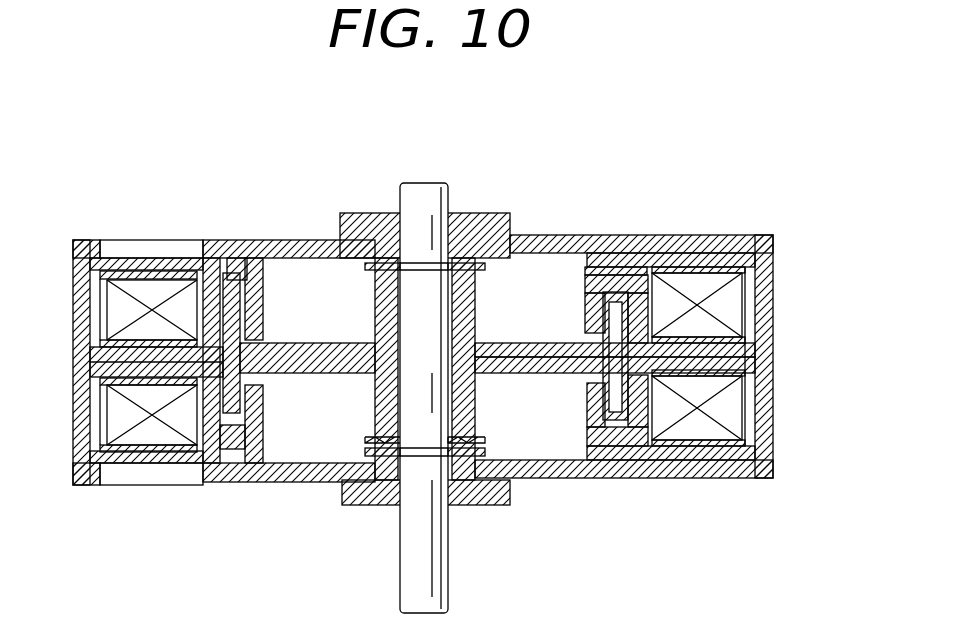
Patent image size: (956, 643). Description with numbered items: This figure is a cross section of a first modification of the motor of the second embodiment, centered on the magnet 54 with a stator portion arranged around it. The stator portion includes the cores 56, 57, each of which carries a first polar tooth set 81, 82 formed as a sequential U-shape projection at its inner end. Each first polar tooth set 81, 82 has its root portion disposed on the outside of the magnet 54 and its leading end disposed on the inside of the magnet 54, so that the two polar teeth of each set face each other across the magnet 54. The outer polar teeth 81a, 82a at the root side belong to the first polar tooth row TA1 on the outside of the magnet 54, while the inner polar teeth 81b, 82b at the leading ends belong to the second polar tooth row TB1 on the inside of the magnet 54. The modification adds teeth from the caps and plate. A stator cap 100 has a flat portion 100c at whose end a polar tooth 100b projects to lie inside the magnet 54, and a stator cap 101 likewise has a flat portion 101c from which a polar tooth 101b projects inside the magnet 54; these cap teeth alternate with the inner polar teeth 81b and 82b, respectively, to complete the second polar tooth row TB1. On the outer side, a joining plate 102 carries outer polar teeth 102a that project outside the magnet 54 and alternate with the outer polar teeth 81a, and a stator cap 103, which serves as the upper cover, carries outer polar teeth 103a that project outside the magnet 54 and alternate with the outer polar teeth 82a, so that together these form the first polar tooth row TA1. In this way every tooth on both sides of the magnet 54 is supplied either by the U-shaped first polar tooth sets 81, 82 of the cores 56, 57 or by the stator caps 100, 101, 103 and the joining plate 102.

The stator cap 100 is at (125, 486).
The polar tooth 100b is at (268, 470).
The flat portion 100c is at (170, 486).
The stator cap 101 is at (117, 258).
The polar tooth 101b is at (258, 298).
The flat portion 101c is at (143, 257).
The joining plate 102 is at (92, 487).
The outer polar tooth 102a is at (210, 486).
The stator cap 103 is at (317, 238).
The outer polar tooth 103a is at (213, 300).
The magnet 54 is at (615, 305).
The core 56 is at (745, 364).
The core 57 is at (748, 350).
The first polar tooth set 81 is at (572, 461).
The outer polar tooth 81a is at (637, 402).
The inner polar tooth 81b is at (592, 407).
The first polar tooth set 82 is at (590, 240).
The outer polar tooth 82a is at (658, 262).
The inner polar tooth 82b is at (592, 272).
The second polar tooth row TB1 is at (578, 394).
The first polar tooth row TA1 is at (667, 404).